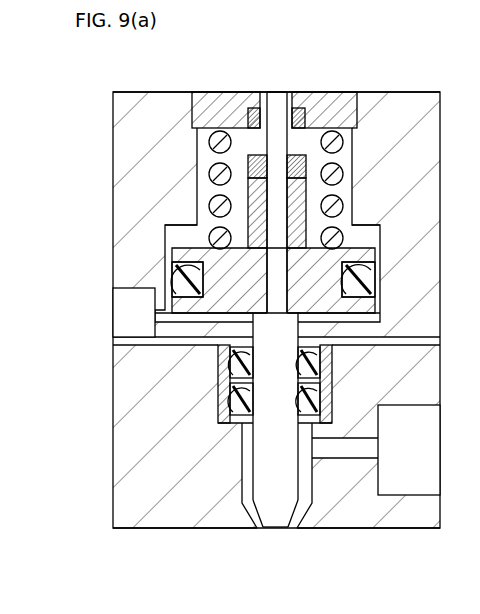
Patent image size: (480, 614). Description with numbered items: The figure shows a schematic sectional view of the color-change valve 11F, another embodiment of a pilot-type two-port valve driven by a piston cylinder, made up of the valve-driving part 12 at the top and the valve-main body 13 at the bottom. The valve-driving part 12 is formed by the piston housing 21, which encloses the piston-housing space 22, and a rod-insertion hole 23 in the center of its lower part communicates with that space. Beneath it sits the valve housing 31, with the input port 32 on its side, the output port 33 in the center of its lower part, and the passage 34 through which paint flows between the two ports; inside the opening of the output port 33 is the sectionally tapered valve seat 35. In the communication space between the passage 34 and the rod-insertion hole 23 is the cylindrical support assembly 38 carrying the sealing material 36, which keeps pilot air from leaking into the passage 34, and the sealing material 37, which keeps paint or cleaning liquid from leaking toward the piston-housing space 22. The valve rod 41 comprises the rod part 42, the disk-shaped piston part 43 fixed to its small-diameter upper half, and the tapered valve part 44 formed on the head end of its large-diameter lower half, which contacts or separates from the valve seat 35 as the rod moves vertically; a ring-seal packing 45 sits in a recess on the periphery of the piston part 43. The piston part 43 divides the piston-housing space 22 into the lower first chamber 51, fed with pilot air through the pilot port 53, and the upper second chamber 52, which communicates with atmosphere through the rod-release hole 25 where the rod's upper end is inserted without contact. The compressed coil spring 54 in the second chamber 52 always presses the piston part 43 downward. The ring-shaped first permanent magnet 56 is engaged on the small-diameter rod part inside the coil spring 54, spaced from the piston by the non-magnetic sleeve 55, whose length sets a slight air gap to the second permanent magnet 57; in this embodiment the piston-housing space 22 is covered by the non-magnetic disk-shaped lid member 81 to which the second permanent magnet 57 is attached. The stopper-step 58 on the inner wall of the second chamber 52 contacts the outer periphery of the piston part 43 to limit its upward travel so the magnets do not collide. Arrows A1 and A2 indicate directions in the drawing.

The color-change valve 11F is at (384, 92).
The valve-driving part 12 is at (113, 140).
The valve-main body 13 is at (113, 496).
The piston housing 21 is at (440, 135).
The piston-housing space 22 is at (205, 165).
The rod-insertion hole 23 is at (282, 331).
The rod-release hole 25 is at (266, 92).
The valve housing 31 is at (130, 430).
The input port 32 is at (403, 495).
The output port 33 is at (274, 518).
The passage 34 is at (287, 467).
The valve seat 35 is at (258, 527).
The sealing material 36 is at (222, 365).
The sealing material 37 is at (220, 398).
The support assembly 38 is at (324, 366).
The valve rod 41 is at (282, 93).
The rod part 42 is at (263, 453).
The piston part 43 is at (228, 296).
The valve part 44 is at (280, 530).
The ring-seal packing 45 is at (366, 284).
The first chamber 51 is at (190, 317).
The second chamber 52 is at (200, 212).
The pilot port 53 is at (128, 300).
The coil spring 54 is at (340, 172).
The sleeve 55 is at (308, 222).
The first permanent magnet 56 is at (250, 170).
The second permanent magnet 57 is at (250, 118).
The stopper-step 58 is at (182, 228).
The lid member 81 is at (232, 98).
The direction A1 is at (453, 172).
The direction A2 is at (453, 465).